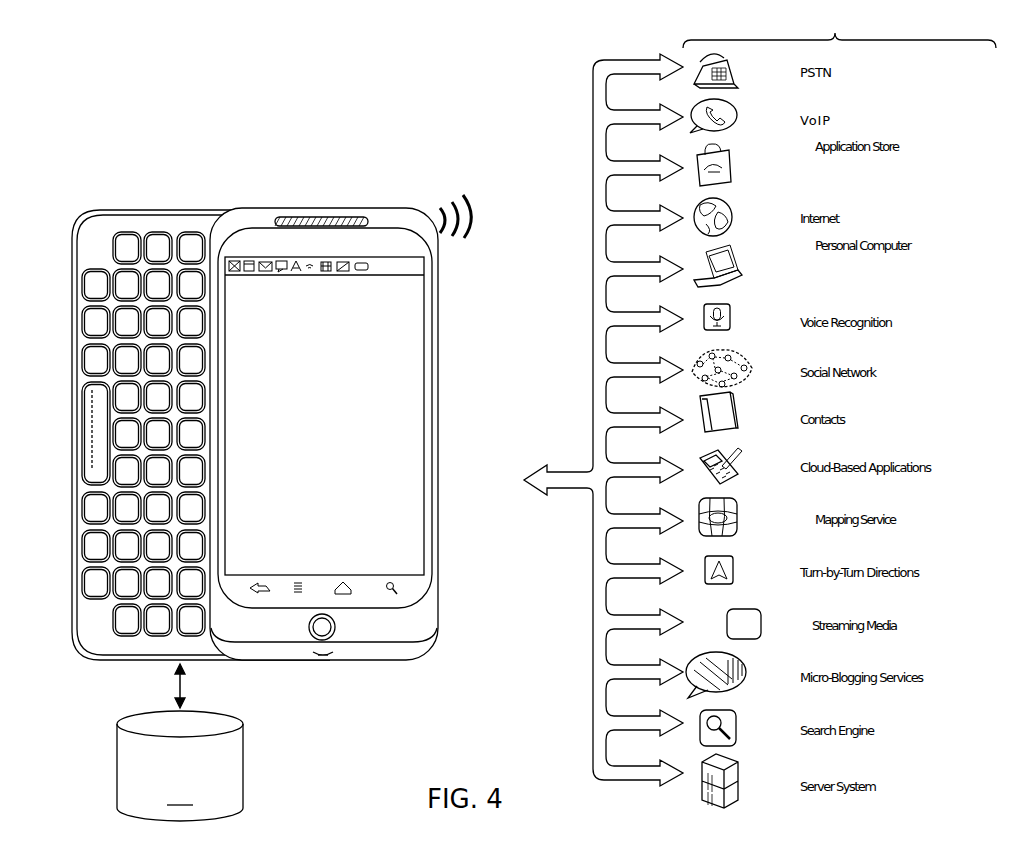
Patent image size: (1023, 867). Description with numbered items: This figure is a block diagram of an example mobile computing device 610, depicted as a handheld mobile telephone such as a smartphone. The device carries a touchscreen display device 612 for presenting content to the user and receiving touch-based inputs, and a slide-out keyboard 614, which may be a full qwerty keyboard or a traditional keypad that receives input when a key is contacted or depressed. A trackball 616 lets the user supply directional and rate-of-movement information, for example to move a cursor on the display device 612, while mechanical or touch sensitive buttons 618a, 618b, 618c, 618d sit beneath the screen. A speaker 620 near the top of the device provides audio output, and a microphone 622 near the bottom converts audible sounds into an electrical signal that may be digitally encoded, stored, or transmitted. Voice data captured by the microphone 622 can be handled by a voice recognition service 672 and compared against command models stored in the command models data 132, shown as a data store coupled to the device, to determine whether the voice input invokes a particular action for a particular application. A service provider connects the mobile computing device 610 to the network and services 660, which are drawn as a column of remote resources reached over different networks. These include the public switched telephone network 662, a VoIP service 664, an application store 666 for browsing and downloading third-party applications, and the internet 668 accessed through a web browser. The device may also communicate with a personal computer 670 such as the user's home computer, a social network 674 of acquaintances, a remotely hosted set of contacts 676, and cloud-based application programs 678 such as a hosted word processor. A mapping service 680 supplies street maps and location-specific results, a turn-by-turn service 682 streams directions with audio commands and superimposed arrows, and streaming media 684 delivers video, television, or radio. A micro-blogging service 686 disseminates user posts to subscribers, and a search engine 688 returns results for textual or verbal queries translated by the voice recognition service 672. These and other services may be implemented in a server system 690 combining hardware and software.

The command models data 132 is at (180, 742).
The mobile computing device 610 is at (375, 155).
The touchscreen display device 612 is at (428, 432).
The keyboard 614 is at (186, 208).
The trackball 616 is at (335, 630).
The button 618a is at (258, 584).
The button 618b is at (299, 582).
The button 618c is at (344, 582).
The button 618d is at (391, 582).
The speaker 620 is at (330, 217).
The microphone 622 is at (321, 658).
The network services 660 is at (839, 410).
The PSTN 662 is at (738, 72).
The VoIP service 664 is at (737, 110).
The application store 666 is at (737, 162).
The internet 668 is at (737, 215).
The personal computer 670 is at (737, 256).
The voice recognition service 672 is at (736, 308).
The social network 674 is at (744, 352).
The contacts 676 is at (738, 412).
The cloud-based application programs 678 is at (738, 466).
The mapping service 680 is at (738, 506).
The turn-by-turn service 682 is at (736, 561).
The streaming media 684 is at (750, 622).
The micro-blogging service 686 is at (740, 666).
The search engine 688 is at (738, 716).
The server system 690 is at (738, 771).